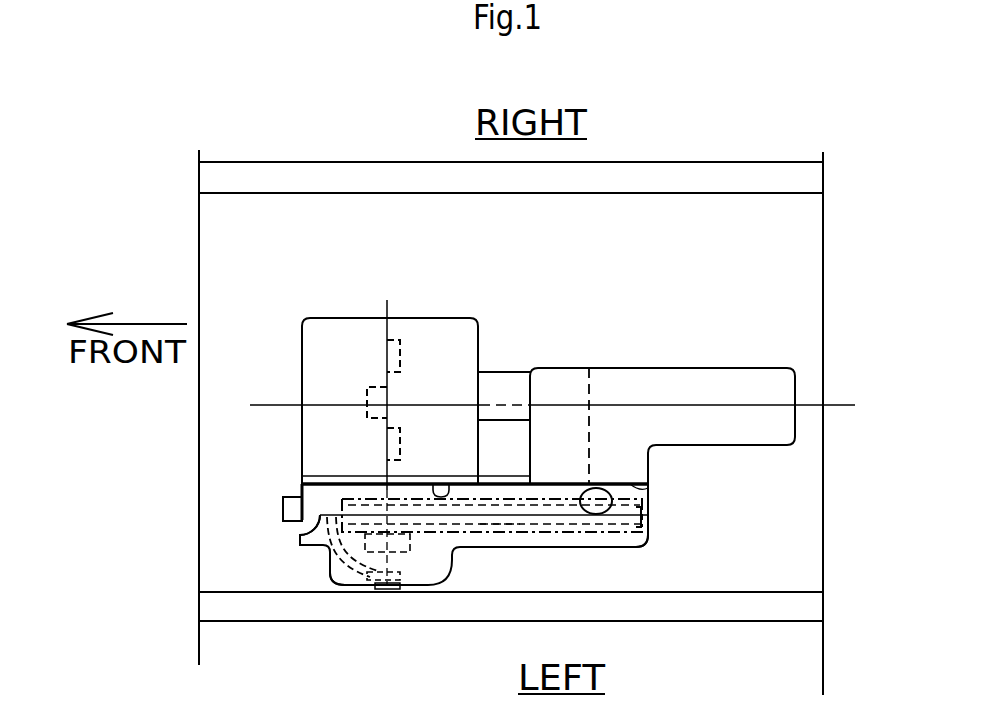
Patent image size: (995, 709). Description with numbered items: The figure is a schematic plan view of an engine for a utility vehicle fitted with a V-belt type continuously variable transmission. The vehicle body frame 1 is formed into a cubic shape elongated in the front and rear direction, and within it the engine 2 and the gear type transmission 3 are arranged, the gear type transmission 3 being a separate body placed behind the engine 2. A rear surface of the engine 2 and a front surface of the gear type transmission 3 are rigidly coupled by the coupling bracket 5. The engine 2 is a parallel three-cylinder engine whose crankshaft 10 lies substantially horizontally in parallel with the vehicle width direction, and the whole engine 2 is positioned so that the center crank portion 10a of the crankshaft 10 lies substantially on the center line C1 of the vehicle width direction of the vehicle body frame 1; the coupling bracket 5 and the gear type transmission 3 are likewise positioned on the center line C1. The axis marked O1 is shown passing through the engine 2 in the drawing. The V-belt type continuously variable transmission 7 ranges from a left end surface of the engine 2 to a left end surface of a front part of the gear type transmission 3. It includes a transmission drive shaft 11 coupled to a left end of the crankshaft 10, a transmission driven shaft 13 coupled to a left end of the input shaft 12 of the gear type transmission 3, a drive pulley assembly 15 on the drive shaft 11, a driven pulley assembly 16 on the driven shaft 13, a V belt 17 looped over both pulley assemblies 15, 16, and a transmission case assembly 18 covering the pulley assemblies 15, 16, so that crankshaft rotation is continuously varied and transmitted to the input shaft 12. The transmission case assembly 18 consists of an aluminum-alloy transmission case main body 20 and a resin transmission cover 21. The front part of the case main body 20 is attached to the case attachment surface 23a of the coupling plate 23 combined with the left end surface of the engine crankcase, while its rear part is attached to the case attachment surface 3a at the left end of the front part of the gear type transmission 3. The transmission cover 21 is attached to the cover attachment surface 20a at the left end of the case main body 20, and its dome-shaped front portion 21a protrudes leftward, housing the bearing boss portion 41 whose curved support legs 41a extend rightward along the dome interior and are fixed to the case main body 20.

The vehicle body frame 1 is at (680, 176).
The engine 2 is at (318, 306).
The gear type transmission 3 is at (667, 360).
The case attachment surface 3a is at (650, 490).
The coupling bracket 5 is at (500, 386).
The V-belt type continuously variable transmission 7 is at (270, 503).
The crankshaft 10 is at (383, 366).
The center crank portion 10a is at (367, 415).
The transmission drive shaft 11 is at (435, 582).
The input shaft 12 is at (590, 461).
The transmission driven shaft 13 is at (592, 520).
The drive pulley assembly 15 is at (327, 503).
The driven pulley assembly 16 is at (607, 538).
The V belt 17 is at (490, 525).
The transmission case assembly 18 is at (562, 513).
The transmission case main body 20 is at (648, 490).
The cover attachment surface 20a is at (322, 528).
The transmission cover 21 is at (645, 528).
The front portion 21a is at (347, 588).
The coupling plate 23 is at (455, 476).
The case attachment surface 23a is at (433, 484).
The bearing boss portion 41 is at (386, 588).
The support legs 41a is at (328, 566).
The center line C1 is at (267, 404).
The motor axis O1 is at (387, 307).